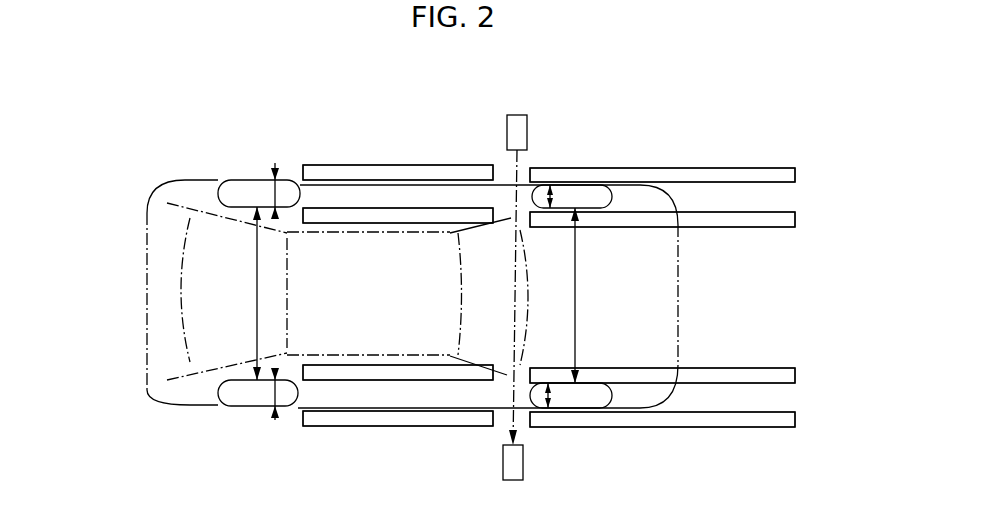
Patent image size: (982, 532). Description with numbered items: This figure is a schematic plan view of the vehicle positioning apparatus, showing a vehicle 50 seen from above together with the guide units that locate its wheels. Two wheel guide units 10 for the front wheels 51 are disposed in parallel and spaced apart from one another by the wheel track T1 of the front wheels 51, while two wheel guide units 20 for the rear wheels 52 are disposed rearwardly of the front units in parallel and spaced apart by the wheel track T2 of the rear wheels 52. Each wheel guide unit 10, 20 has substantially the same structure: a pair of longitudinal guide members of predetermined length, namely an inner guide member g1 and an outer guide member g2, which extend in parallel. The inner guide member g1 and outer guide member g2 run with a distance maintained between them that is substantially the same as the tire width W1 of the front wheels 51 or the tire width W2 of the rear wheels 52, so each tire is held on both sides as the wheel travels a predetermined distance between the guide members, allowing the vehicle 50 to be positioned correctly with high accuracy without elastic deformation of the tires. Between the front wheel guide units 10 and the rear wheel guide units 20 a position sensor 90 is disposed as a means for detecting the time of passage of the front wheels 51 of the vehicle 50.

The wheel guide unit 10 is at (688, 156).
The wheel guide unit 20 is at (328, 153).
The vehicle 50 is at (138, 301).
The front wheel 51 is at (597, 190).
The rear wheel 52 is at (240, 190).
The position sensor 90 is at (508, 118).
The inner guide member g1 is at (427, 216).
The outer guide member g2 is at (397, 172).
The wheel track T1 is at (590, 295).
The wheel track T2 is at (239, 293).
The tire width W1 is at (553, 200).
The tire width W2 is at (272, 195).